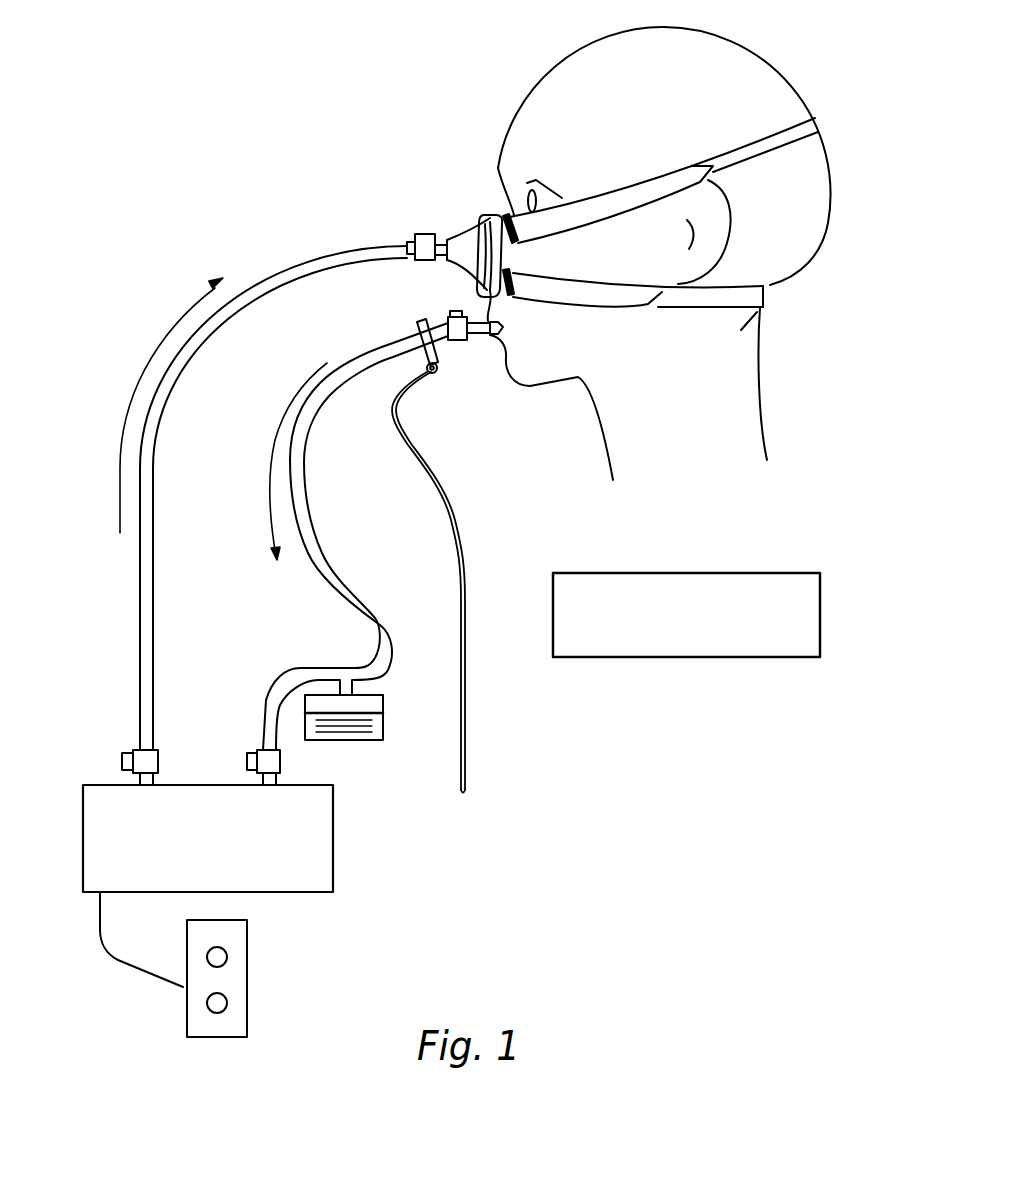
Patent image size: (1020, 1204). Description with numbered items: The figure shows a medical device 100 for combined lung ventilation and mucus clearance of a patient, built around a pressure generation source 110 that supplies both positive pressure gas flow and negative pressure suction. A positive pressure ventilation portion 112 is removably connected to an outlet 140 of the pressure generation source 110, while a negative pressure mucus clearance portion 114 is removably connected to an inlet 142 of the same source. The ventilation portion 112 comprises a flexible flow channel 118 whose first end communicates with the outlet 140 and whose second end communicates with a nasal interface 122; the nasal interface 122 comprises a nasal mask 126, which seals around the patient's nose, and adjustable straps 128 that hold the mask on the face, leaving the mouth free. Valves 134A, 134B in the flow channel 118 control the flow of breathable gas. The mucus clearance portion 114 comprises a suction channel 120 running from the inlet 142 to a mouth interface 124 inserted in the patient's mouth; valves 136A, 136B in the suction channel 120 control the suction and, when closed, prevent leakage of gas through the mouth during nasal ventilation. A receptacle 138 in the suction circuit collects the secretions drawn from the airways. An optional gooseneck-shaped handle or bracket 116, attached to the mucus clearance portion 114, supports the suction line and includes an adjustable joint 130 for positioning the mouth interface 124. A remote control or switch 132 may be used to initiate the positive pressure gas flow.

The medical device 100 is at (221, 139).
The pressure generation source 110 is at (333, 833).
The positive pressure ventilation portion 112 is at (121, 605).
The negative pressure mucus clearance portion 114 is at (305, 600).
The handle or bracket 116 is at (468, 647).
The flow channel 118 is at (178, 382).
The suction channel 120 is at (305, 488).
The nasal interface 122 is at (476, 203).
The mouth interface 124 is at (483, 345).
The nasal mask 126 is at (460, 237).
The adjustable straps 128 is at (771, 136).
The adjustable joint 130 is at (440, 374).
The remote control or switch 132 is at (247, 984).
The valve 134A is at (158, 763).
The valve 134B is at (430, 234).
The valve 136A is at (281, 760).
The valve 136B is at (449, 312).
The receptacle 138 is at (383, 715).
The outlet 140 is at (142, 778).
The inlet 142 is at (270, 778).